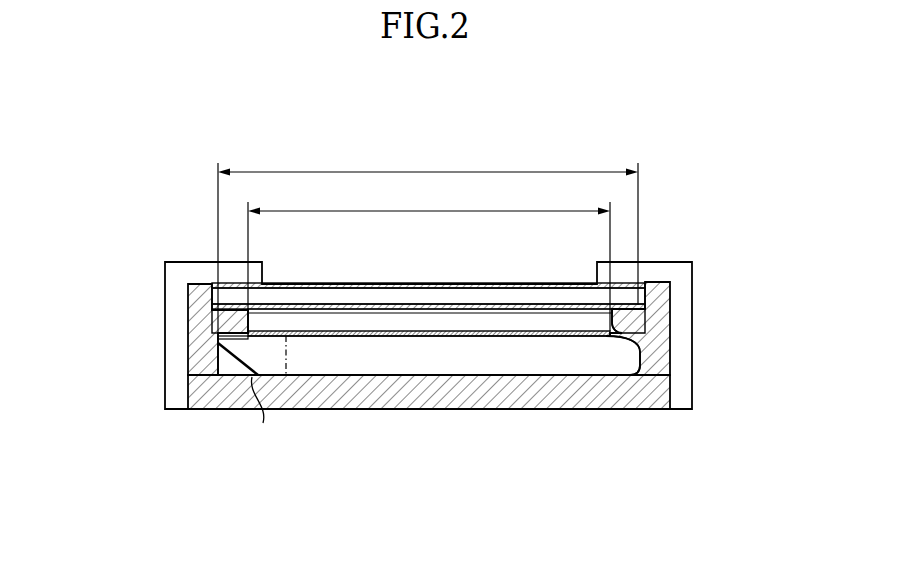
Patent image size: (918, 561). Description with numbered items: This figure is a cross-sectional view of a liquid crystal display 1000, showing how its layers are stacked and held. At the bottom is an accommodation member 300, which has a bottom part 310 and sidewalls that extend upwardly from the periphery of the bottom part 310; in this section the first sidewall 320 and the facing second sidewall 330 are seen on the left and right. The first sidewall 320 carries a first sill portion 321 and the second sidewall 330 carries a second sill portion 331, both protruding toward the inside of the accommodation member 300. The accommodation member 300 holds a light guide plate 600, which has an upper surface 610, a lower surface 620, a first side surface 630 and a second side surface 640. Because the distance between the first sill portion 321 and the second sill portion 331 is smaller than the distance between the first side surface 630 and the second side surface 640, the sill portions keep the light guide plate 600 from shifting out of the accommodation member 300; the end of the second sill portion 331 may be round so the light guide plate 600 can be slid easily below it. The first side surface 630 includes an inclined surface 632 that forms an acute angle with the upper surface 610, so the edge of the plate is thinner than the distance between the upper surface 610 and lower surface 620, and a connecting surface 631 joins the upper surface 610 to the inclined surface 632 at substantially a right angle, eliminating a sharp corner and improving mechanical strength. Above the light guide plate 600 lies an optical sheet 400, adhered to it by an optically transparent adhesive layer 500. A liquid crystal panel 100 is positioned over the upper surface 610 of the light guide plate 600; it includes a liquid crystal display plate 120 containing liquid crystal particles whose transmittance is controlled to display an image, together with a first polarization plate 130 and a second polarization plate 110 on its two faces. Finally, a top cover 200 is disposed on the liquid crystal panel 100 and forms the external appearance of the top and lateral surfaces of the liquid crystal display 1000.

The liquid crystal display 1000 is at (545, 108).
The liquid crystal panel 100 is at (508, 290).
The second polarization plate 110 is at (643, 278).
The liquid crystal display plate 120 is at (638, 293).
The first polarization plate 130 is at (660, 308).
The top cover 200 is at (170, 291).
The accommodation member 300 is at (460, 366).
The bottom part 310 is at (430, 390).
The first sidewall 320 is at (209, 348).
The first sill portion 321 is at (236, 318).
The second sidewall 330 is at (677, 344).
The second sill portion 331 is at (620, 318).
The optical sheet 400 is at (509, 322).
The adhesive layer 500 is at (640, 338).
The light guide plate 600 is at (429, 396).
The upper surface 610 is at (530, 338).
The lower surface 620 is at (577, 375).
The first side surface 630 is at (155, 353).
The connecting surface 631 is at (218, 340).
The inclined surface 632 is at (226, 366).
The second side surface 640 is at (662, 367).